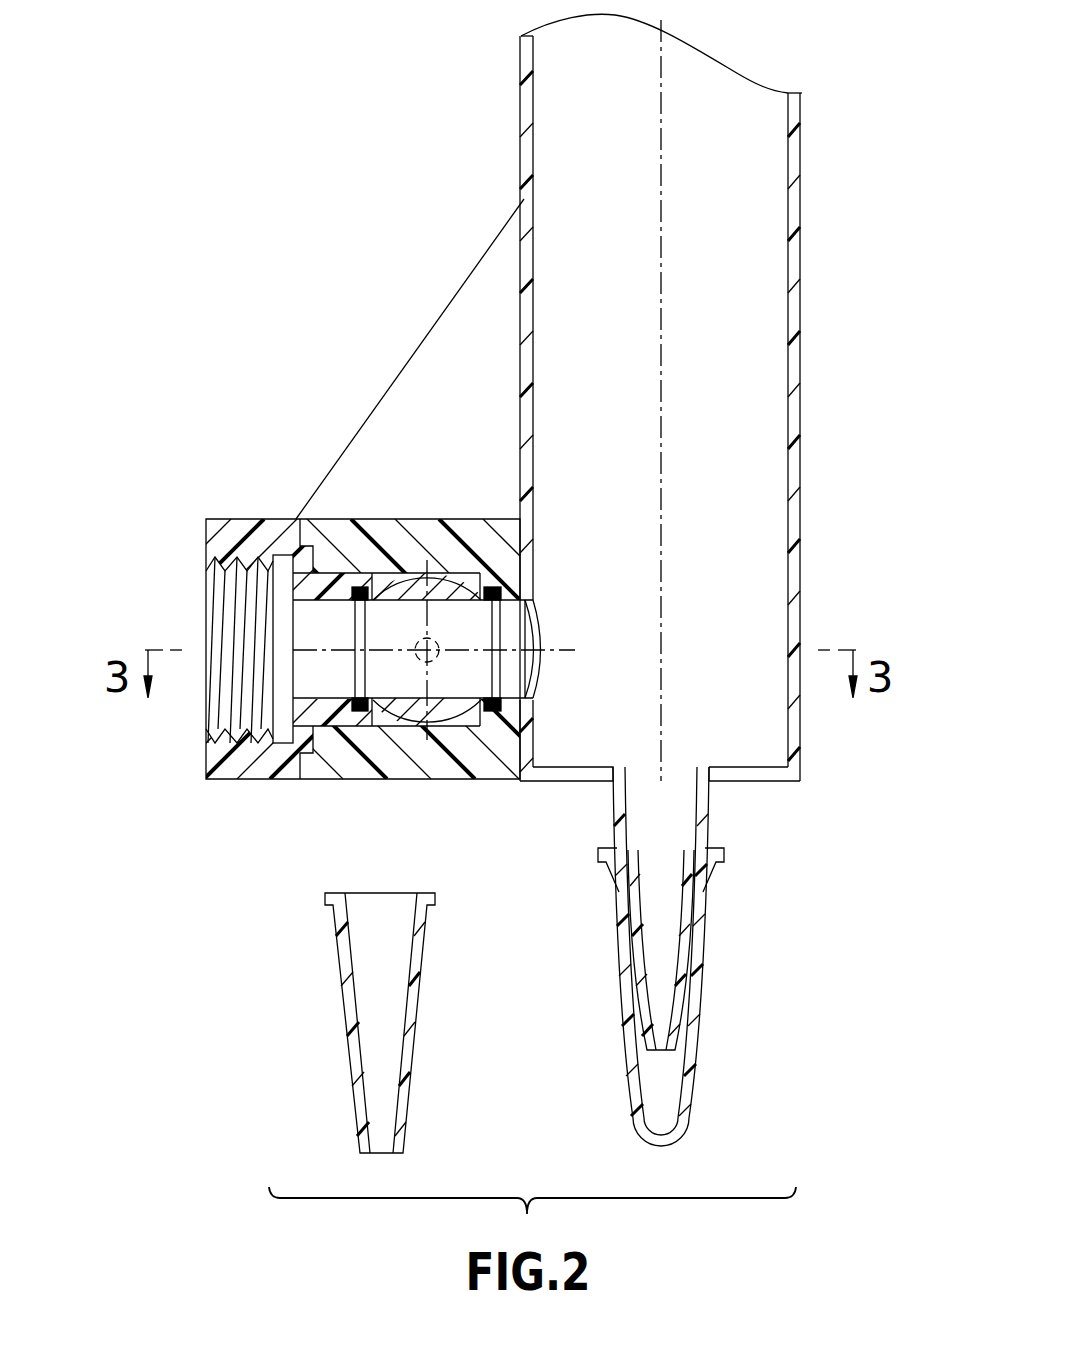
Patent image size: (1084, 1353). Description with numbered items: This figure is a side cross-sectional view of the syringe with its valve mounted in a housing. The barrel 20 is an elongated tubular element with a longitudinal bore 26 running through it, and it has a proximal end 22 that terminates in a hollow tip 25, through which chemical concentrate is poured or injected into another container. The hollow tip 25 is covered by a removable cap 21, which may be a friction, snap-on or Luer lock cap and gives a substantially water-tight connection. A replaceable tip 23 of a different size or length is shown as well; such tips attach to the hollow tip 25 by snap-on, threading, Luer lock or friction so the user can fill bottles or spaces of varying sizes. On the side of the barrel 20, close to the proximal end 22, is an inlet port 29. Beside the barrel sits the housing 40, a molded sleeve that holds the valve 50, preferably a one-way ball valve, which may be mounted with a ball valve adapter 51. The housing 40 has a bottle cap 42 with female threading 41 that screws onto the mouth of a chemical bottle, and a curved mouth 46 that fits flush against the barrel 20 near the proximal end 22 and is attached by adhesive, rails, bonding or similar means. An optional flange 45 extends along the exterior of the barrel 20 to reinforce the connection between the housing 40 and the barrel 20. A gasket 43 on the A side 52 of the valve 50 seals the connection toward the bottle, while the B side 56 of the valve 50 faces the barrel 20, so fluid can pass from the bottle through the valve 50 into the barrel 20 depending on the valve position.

The barrel 20 is at (803, 206).
The removable cap 21 is at (683, 1098).
The proximal end 22 is at (803, 740).
The replaceable tip 23 is at (348, 1045).
The hollow tip 25 is at (708, 805).
The longitudinal bore 26 is at (543, 150).
The inlet port 29 is at (536, 627).
The housing 40 is at (418, 782).
The female threading 41 is at (215, 708).
The bottle cap 42 is at (252, 517).
The gasket 43 is at (282, 608).
The flange 45 is at (412, 368).
The mouth 46 is at (508, 782).
The valve 50 is at (397, 685).
The ball valve adapter 51 is at (364, 712).
The A side 52 is at (310, 682).
The B side 56 is at (520, 680).